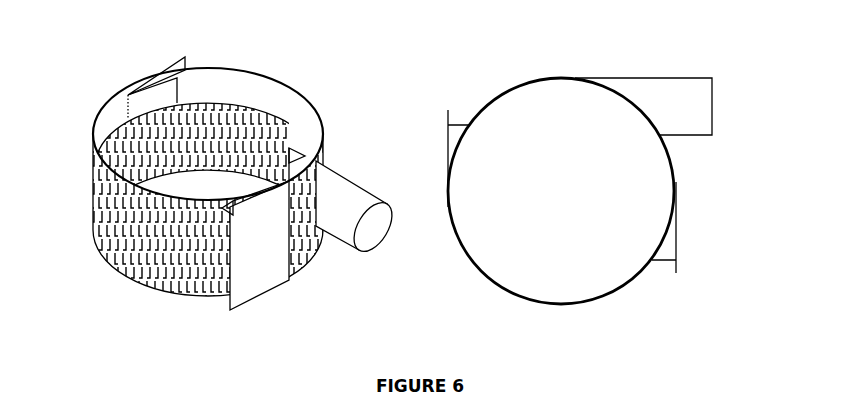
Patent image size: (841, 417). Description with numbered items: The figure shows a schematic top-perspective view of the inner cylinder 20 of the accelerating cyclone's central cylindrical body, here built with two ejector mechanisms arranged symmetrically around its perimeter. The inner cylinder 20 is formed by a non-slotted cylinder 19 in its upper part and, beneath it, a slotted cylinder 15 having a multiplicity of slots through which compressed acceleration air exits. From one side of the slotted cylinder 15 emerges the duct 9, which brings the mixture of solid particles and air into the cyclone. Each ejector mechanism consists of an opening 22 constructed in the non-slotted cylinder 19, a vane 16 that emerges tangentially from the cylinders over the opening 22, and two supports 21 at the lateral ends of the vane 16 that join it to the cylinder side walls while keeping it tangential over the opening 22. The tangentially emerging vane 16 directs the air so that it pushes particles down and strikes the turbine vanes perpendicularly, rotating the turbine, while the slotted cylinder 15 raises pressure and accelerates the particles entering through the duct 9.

The duct 9 is at (345, 188).
The slotted cylinder 15 is at (265, 130).
The tangentially emerging vane 16 is at (240, 258).
The non-slotted cylinder 19 is at (268, 100).
The inner cylinder 20 is at (87, 262).
The supports 21 is at (187, 60).
The opening 22 is at (176, 97).